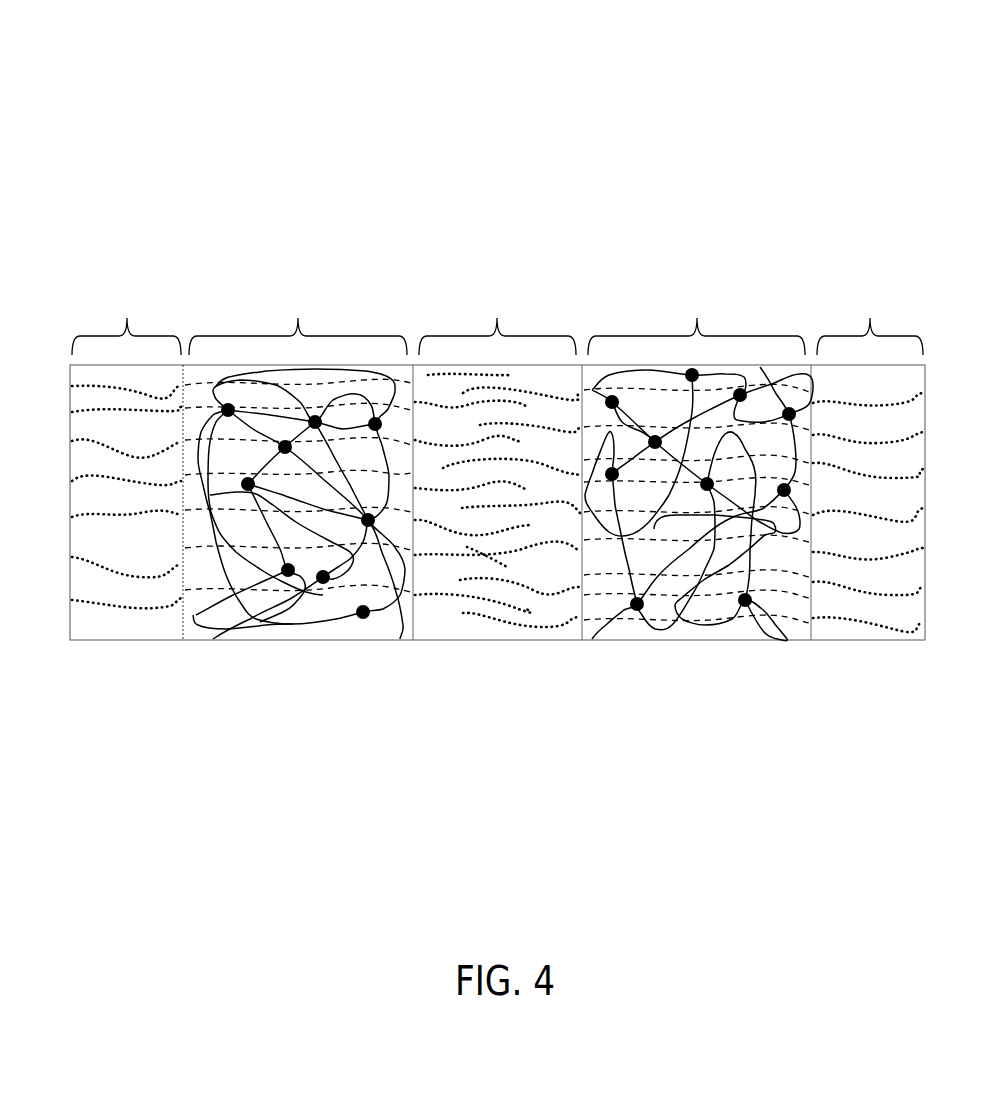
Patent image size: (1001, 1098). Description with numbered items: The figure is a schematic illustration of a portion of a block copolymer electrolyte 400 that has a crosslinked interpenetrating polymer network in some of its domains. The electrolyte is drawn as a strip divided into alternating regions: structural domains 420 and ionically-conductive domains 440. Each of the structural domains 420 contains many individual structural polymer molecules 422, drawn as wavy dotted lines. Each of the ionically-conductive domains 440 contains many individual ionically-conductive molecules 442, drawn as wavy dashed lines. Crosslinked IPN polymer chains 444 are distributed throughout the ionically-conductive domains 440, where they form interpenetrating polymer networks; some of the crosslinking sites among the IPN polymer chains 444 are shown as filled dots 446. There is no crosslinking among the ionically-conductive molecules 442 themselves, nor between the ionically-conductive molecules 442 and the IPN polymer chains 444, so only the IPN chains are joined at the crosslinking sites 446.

The block copolymer electrolyte 400 is at (236, 157).
The structural domains 420 is at (481, 526).
The structural polymer molecules 422 is at (115, 622).
The ionically-conductive domains 440 is at (487, 562).
The ionically-conductive molecules 442 is at (208, 564).
The crosslinked IPN polymer chains 444 is at (287, 634).
The crosslinking sites 446 is at (357, 632).